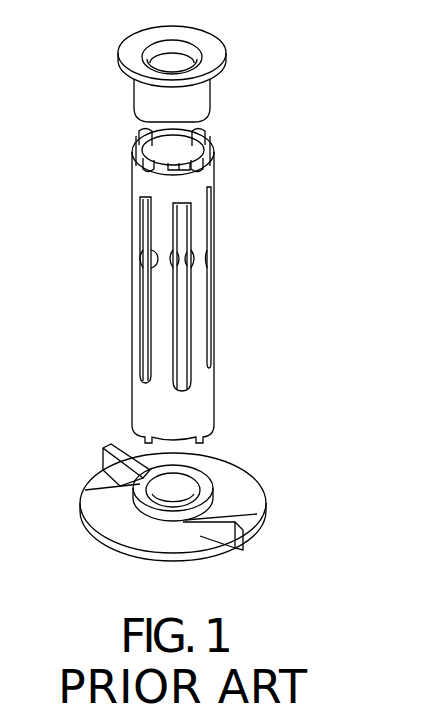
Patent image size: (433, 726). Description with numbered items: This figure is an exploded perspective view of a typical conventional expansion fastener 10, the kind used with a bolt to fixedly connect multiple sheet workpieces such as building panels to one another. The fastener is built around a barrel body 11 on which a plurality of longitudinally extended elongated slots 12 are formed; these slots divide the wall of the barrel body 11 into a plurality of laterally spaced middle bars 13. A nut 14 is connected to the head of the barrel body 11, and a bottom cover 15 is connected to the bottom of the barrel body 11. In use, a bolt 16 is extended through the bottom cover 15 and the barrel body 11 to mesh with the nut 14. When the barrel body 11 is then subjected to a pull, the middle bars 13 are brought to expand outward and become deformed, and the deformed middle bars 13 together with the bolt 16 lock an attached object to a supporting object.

The expansion fastener 10 is at (337, 539).
The barrel body 11 is at (235, 235).
The elongated slots 12 is at (143, 262).
The middle bars 13 is at (142, 317).
The nut 14 is at (213, 55).
The bottom cover 15 is at (245, 487).
The bolt 16 is at (432, 724).